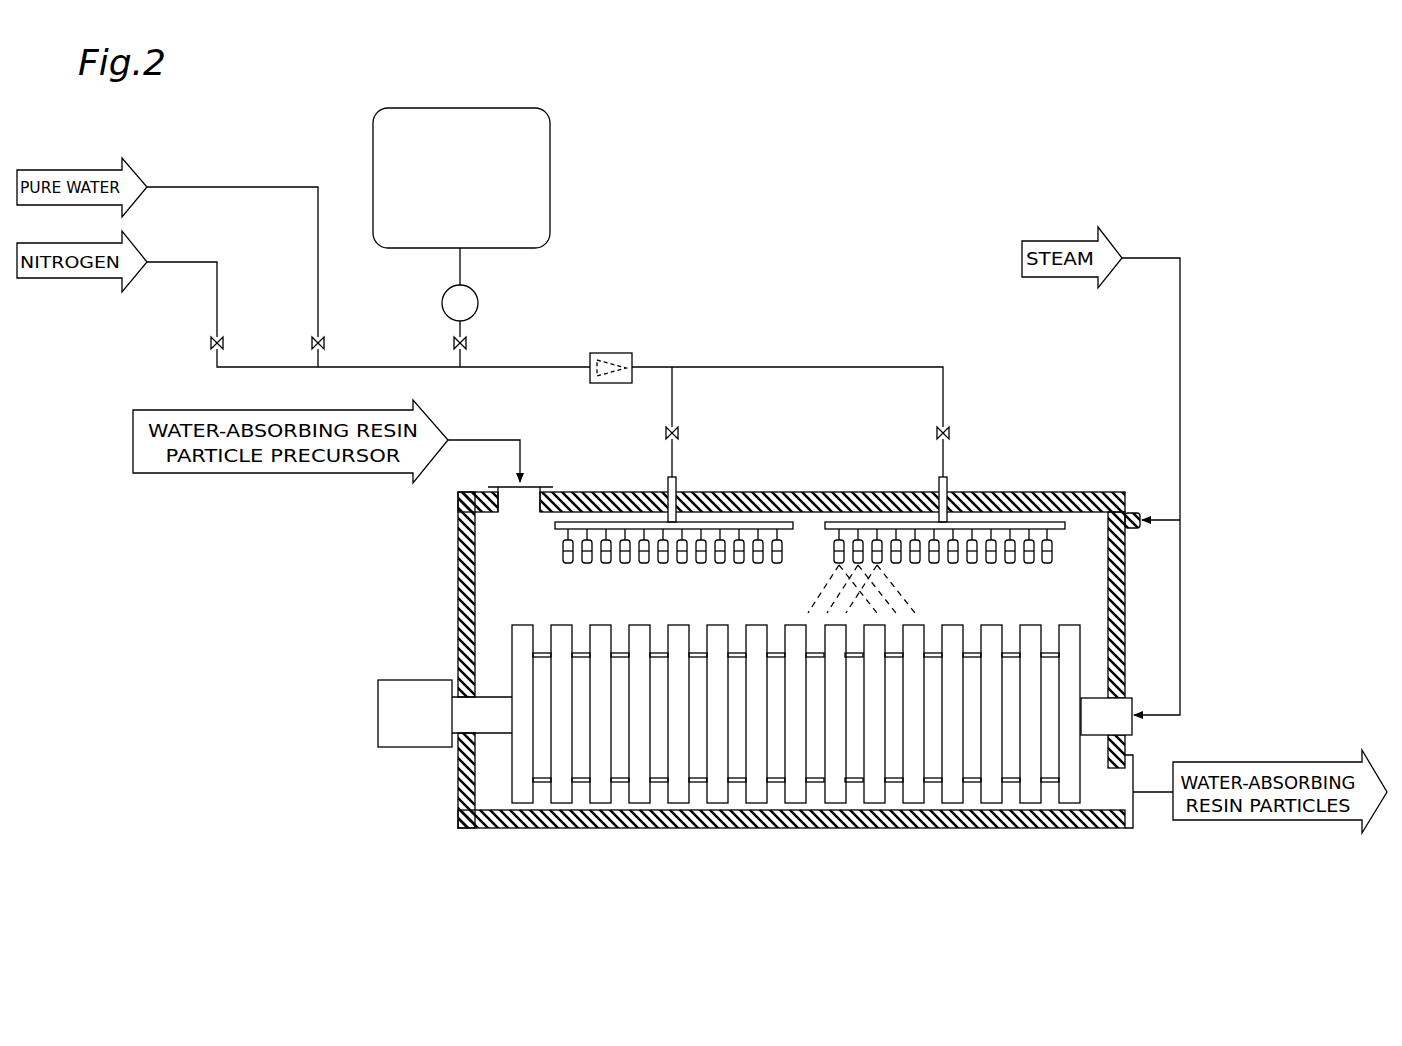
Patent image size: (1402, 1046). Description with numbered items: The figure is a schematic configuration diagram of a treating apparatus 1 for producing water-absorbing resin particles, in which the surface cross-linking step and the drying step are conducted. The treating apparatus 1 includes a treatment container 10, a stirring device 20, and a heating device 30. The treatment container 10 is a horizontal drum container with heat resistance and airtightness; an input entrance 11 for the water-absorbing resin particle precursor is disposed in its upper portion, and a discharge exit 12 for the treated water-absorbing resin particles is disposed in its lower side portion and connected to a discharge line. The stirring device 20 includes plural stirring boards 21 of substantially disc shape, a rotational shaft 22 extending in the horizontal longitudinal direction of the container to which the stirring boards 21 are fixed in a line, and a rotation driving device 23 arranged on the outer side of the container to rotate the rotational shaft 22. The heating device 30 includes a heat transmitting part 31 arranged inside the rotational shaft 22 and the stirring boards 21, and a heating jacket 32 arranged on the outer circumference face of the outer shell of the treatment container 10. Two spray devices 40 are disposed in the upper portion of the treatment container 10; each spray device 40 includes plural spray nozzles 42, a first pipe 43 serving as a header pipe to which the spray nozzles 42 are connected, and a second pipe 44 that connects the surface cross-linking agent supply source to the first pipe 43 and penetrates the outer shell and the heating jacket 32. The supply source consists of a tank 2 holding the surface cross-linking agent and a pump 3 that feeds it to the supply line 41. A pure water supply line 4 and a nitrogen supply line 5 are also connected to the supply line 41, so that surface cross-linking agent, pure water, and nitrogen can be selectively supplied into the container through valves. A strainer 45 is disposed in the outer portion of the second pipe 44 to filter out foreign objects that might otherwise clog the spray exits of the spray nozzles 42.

The treating apparatus 1 is at (1214, 406).
The tank 2 is at (552, 142).
The pump 3 is at (478, 305).
The pure water supply line 4 is at (247, 187).
The nitrogen supply line 5 is at (182, 262).
The treatment container 10 is at (462, 552).
The input entrance 11 is at (538, 487).
The discharge exit 12 is at (1137, 775).
The stirring device 20 is at (495, 633).
The stirring boards 21 is at (633, 795).
The rotational shaft 22 is at (1095, 740).
The rotation driving device 23 is at (378, 700).
The heating device 30 is at (1135, 680).
The heat transmitting part 31 is at (1134, 730).
The heating jacket 32 is at (1125, 497).
The spray device 40 is at (686, 485).
The supply line 41 is at (800, 367).
The spray nozzles 42 is at (650, 562).
The first pipe 43 is at (555, 528).
The second pipe 44 is at (668, 483).
The strainer 45 is at (610, 353).